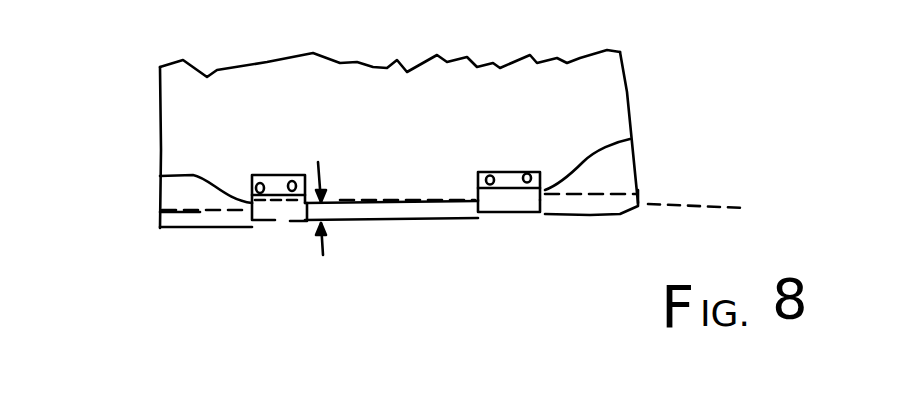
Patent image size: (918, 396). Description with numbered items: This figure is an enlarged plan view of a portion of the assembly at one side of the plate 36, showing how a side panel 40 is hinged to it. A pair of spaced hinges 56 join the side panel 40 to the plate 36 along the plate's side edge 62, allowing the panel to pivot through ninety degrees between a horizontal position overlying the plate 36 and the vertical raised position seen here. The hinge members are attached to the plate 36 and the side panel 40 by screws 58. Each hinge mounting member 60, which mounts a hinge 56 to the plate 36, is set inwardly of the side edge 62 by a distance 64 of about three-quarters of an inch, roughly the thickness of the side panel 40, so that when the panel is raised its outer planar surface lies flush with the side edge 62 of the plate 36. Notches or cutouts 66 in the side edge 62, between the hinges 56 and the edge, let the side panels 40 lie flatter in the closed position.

The plate 36 is at (420, 121).
The side panel 40 is at (480, 204).
The hinge 56 is at (113, 167).
The screw 58 is at (560, 125).
The hinge mounting member 60 is at (647, 98).
The side edge 62 is at (147, 283).
The distance 64 is at (367, 275).
The notch or cutout 66 is at (248, 275).